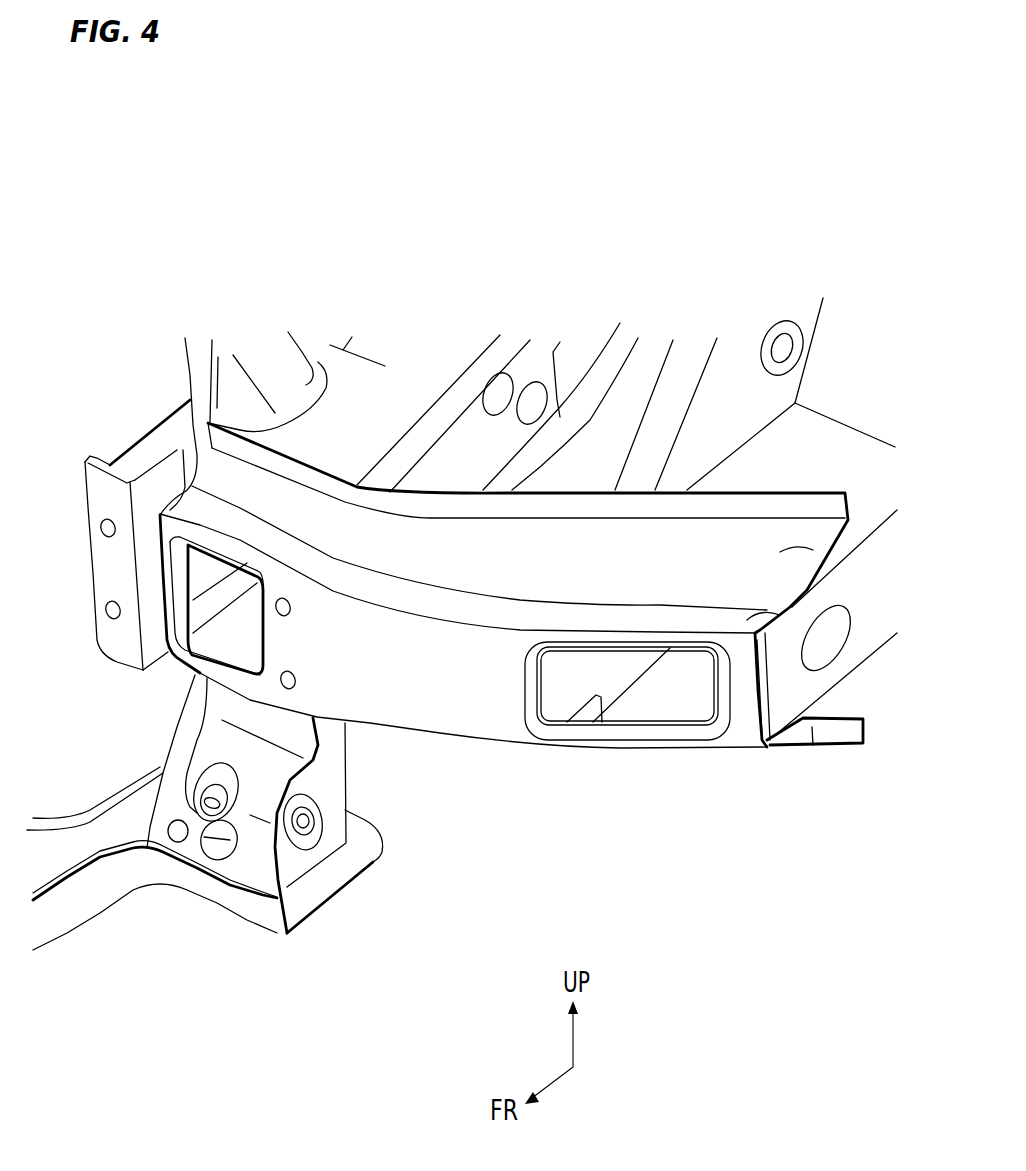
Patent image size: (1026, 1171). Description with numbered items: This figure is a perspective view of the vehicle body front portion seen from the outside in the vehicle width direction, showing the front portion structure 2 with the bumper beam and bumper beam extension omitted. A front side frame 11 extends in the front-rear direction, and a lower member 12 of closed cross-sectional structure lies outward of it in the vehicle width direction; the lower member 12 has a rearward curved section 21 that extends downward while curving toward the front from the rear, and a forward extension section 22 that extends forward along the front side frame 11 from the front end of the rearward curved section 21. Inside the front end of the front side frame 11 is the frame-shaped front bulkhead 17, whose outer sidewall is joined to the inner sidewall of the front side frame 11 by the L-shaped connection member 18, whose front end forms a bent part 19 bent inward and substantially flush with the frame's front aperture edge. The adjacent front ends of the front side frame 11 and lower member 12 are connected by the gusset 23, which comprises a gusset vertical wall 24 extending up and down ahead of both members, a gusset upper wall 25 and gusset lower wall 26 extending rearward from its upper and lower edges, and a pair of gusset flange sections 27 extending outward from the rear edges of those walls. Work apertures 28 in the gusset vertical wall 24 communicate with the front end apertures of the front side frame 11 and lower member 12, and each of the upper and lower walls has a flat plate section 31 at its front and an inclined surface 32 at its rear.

The front portion structure 2 is at (330, 199).
The front side frame 11 is at (523, 398).
The lower member 12 is at (467, 658).
The front bulkhead 17 is at (221, 345).
The connection member 18 is at (157, 430).
The bent part 19 is at (93, 455).
The rearward curved section 21 is at (860, 343).
The forward extension section 22 is at (777, 460).
The gusset 23 is at (437, 733).
The gusset vertical wall 24 is at (738, 733).
The gusset upper wall 25 is at (494, 575).
The gusset lower wall 26 is at (813, 745).
The gusset flange section 27 is at (587, 500).
The work aperture 28 is at (190, 657).
The flat plate section 31 is at (800, 630).
The inclined surface 32 is at (780, 552).